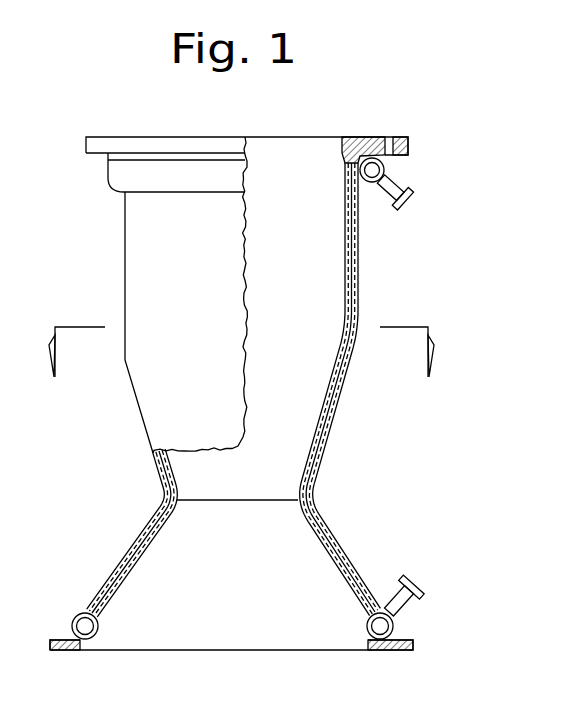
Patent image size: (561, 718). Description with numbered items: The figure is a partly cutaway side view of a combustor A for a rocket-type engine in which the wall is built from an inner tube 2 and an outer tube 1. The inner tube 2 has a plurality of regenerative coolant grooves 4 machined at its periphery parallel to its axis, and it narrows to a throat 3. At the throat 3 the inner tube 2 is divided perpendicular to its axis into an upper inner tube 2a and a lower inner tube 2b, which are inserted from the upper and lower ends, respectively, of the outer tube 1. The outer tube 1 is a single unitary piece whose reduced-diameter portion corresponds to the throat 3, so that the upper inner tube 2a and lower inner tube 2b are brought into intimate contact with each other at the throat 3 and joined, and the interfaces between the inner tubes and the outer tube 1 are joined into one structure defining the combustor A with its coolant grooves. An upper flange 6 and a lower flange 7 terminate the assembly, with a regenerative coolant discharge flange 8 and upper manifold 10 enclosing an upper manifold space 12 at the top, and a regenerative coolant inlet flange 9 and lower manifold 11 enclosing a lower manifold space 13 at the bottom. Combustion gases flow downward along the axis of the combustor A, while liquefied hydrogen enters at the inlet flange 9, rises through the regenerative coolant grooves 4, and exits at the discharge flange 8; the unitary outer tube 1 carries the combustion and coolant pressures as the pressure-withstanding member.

The outer tube 1 is at (362, 277).
The inner tube 2 is at (241, 352).
The upper inner tube 2a is at (343, 352).
The lower inner tube 2b is at (338, 584).
The throat 3 is at (258, 500).
The regenerative coolant grooves 4 is at (347, 386).
The upper flange 6 is at (406, 138).
The lower flange 7 is at (402, 652).
The regenerative coolant discharge flange 8 is at (386, 169).
The regenerative coolant inlet flange 9 is at (390, 591).
The upper manifold 10 is at (398, 186).
The lower manifold 11 is at (395, 607).
The upper manifold space 12 is at (366, 174).
The lower manifold space 13 is at (397, 633).
The combustor A is at (276, 322).